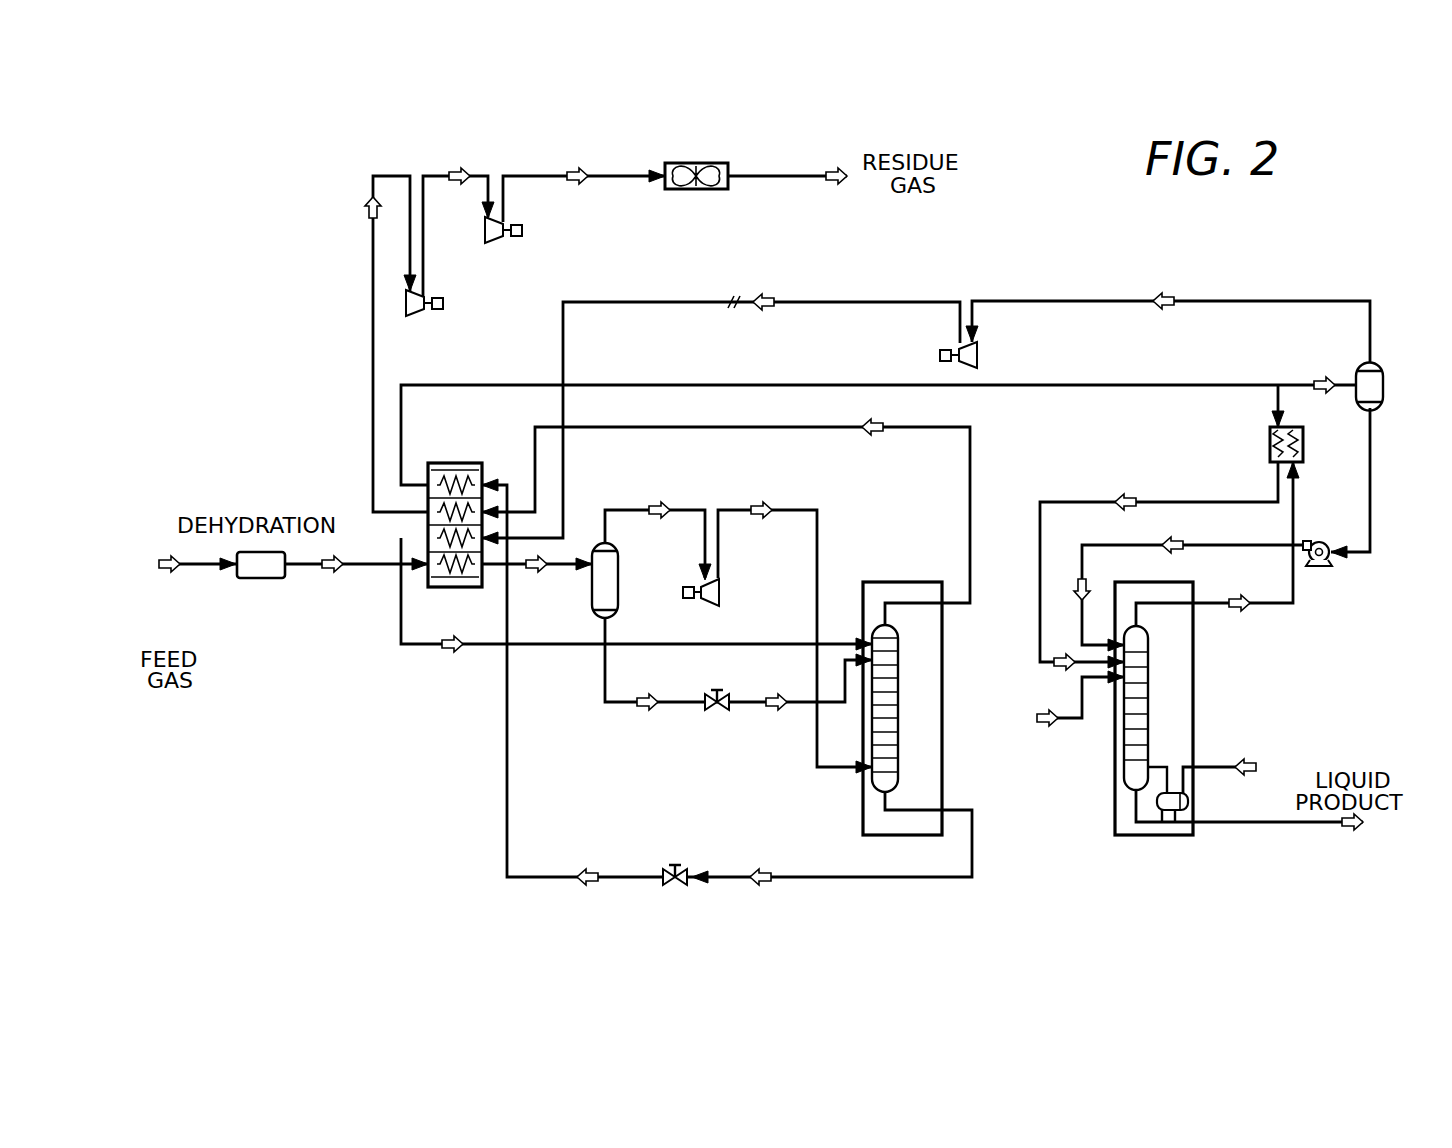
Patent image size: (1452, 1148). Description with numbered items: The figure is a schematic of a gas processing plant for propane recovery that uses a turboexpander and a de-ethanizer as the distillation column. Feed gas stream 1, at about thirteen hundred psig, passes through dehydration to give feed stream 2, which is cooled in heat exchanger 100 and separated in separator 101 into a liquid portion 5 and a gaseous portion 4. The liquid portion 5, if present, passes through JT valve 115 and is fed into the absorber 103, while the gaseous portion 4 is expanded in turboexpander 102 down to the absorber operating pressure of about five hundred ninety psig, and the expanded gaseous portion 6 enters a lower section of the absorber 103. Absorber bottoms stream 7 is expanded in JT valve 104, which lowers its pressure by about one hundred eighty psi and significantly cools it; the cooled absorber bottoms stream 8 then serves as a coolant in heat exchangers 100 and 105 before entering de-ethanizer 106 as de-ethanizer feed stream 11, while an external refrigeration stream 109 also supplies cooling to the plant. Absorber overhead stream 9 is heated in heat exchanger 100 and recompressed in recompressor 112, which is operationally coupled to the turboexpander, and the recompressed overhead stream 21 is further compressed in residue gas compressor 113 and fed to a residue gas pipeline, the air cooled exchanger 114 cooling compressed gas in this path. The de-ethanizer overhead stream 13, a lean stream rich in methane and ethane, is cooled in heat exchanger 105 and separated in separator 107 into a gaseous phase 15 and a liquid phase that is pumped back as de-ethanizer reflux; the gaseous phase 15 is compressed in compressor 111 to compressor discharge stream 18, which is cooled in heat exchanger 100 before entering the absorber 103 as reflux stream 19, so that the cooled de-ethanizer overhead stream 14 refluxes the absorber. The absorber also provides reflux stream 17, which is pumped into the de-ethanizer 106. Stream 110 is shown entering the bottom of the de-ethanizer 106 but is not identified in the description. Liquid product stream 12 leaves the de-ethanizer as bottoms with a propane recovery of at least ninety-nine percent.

The feed gas stream 1 is at (167, 572).
The gaseous portion 2 is at (331, 572).
The gaseous portion 4 is at (660, 504).
The liquid portion 5 is at (652, 710).
The expanded gaseous portion 6 is at (762, 504).
The absorber bottoms stream 7 is at (762, 866).
The cooled absorber bottoms stream 8 is at (587, 868).
The absorber overhead stream 9 is at (878, 432).
The de-ethanizer feed stream 11 is at (1125, 496).
The liquid product stream 12 is at (1355, 832).
The overhead stream 13 is at (1240, 608).
The cooled de-ethanizer overhead stream 14 is at (1320, 378).
The gaseous phase 15 is at (1165, 294).
The reflux stream 17 is at (1168, 536).
The compressor discharge stream 18 is at (765, 295).
The reflux stream 19 is at (453, 652).
The recompressed overhead stream 21 is at (458, 168).
The heat exchanger 100 is at (437, 588).
The separator 101 is at (620, 583).
The turboexpander 102 is at (722, 594).
The absorber 103 is at (862, 806).
The JT valve 104 is at (672, 862).
The heat exchanger 105 is at (1268, 445).
The de-ethanizer 106 is at (1150, 836).
The separator 107 is at (1384, 388).
The external refrigeration stream 109 is at (1045, 724).
The reboiler heating stream 110 is at (1245, 758).
The compressor 111 is at (982, 357).
The recompressor 112 is at (412, 317).
The residue gas compressor 113 is at (492, 244).
The air cooled exchanger 114 is at (690, 162).
The JT valve 115 is at (718, 712).